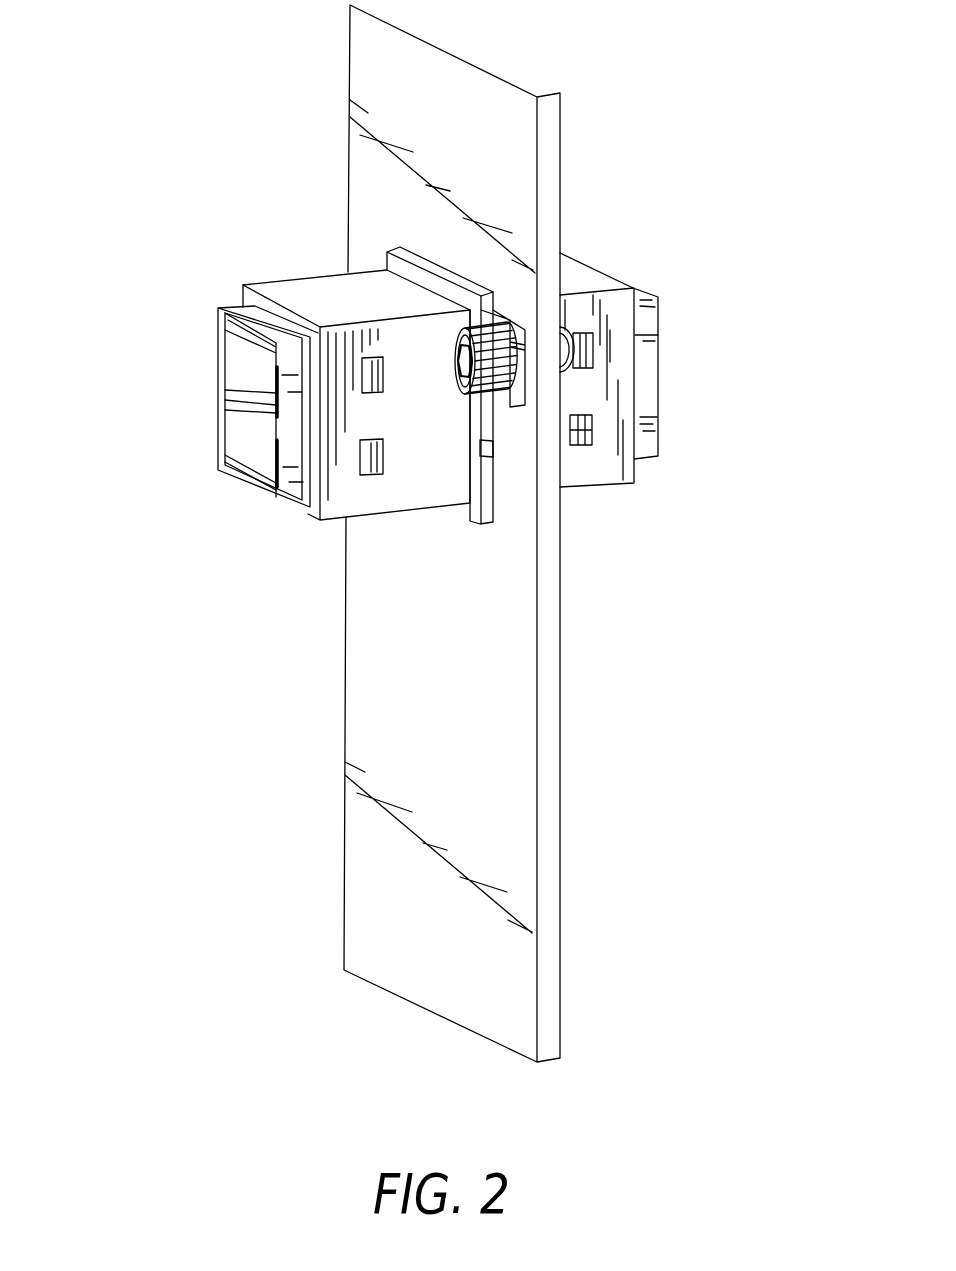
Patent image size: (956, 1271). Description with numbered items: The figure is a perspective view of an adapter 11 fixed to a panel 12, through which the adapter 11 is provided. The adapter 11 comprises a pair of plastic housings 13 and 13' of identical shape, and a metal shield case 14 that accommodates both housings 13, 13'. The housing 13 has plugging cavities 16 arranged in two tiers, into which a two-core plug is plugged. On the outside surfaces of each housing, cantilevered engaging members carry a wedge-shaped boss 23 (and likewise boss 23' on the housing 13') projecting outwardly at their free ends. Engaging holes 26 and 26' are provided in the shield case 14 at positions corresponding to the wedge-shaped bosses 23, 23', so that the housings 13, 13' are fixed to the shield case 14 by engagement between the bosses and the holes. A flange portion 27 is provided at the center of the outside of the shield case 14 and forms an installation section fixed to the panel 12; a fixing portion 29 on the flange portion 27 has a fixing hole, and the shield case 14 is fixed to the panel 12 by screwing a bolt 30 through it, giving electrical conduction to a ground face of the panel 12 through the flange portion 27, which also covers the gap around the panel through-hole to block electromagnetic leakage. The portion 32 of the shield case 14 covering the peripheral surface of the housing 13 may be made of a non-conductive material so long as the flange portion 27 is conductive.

The adapter 11 is at (190, 276).
The panel 12 is at (482, 689).
The housing 13 is at (207, 406).
The housing 13' is at (663, 399).
The shield case 14 is at (341, 383).
The plugging cavities 16 is at (253, 433).
The wedge-shaped boss 23 is at (380, 291).
The wedge-shaped boss 23' is at (635, 436).
The engaging holes 26 is at (378, 512).
The engaging holes 26' is at (658, 404).
The flange portion 27 is at (510, 357).
The fixing portion 29 is at (484, 400).
The bolt 30 is at (457, 375).
The portion for covering the peripheral surface of the housing 32 is at (337, 310).